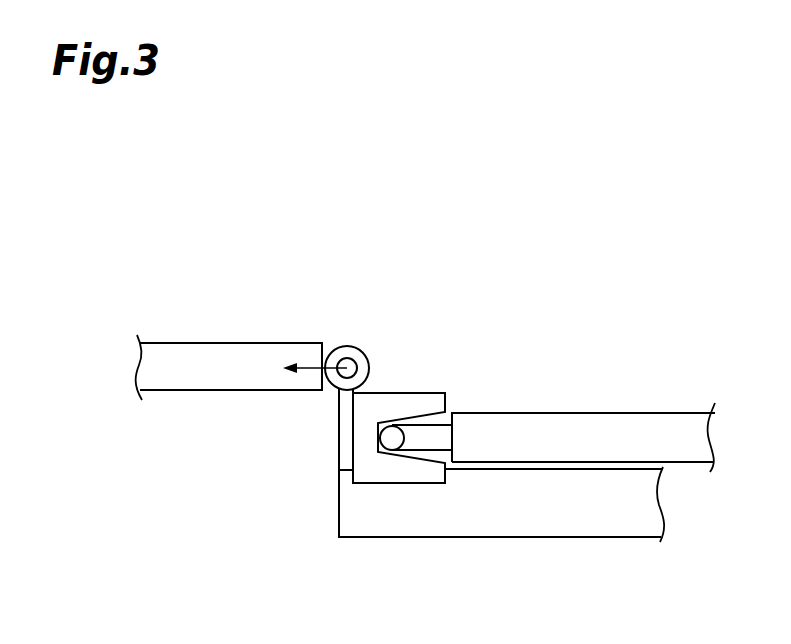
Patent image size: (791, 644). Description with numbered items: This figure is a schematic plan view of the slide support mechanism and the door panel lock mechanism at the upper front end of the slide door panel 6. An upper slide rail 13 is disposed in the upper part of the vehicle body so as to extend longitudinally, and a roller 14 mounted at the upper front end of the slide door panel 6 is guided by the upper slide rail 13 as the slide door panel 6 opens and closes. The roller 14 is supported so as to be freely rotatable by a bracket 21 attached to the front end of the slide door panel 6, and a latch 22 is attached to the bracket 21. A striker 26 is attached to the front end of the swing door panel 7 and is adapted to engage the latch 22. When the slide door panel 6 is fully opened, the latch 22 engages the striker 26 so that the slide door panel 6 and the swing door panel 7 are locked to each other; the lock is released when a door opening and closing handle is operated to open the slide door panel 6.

The upper slide rail 13 is at (223, 357).
The roller 14 is at (347, 350).
The bracket 21 is at (347, 428).
The latch 22 is at (400, 470).
The striker 26 is at (417, 433).
The swing door panel 7 is at (560, 428).
The slide door panel 6 is at (507, 515).